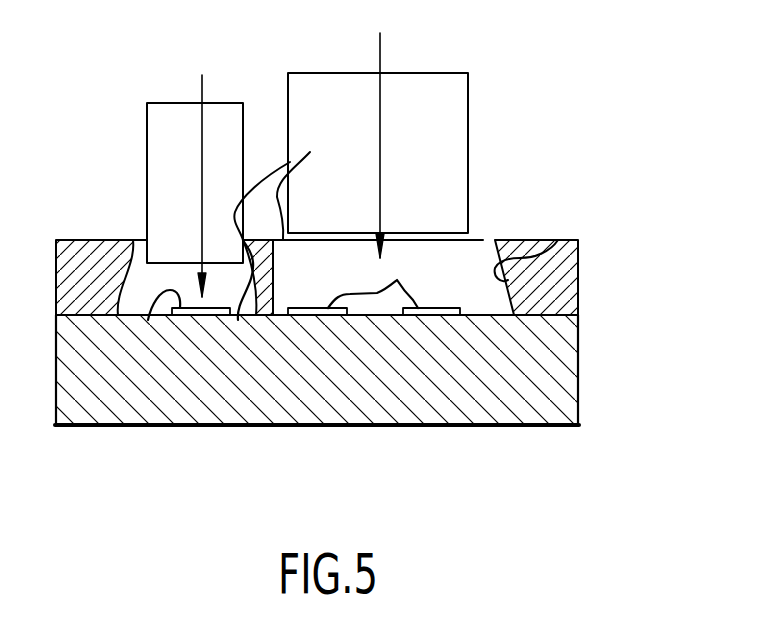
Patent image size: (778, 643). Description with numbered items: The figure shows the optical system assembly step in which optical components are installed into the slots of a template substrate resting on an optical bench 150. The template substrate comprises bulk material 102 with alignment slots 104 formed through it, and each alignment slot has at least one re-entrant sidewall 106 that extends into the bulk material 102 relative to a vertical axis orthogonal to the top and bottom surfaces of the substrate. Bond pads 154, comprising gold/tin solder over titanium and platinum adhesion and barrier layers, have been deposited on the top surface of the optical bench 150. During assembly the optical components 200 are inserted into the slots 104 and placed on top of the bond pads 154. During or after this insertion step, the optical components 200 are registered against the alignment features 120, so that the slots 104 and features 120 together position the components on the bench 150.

The bulk material 102 is at (583, 270).
The alignment slots 104 is at (138, 238).
The re-entrant sidewall 106 is at (238, 320).
The alignment features 120 is at (290, 162).
The optical bench 150 is at (582, 388).
The bond pads 154 is at (148, 320).
The optical components 200 is at (218, 103).